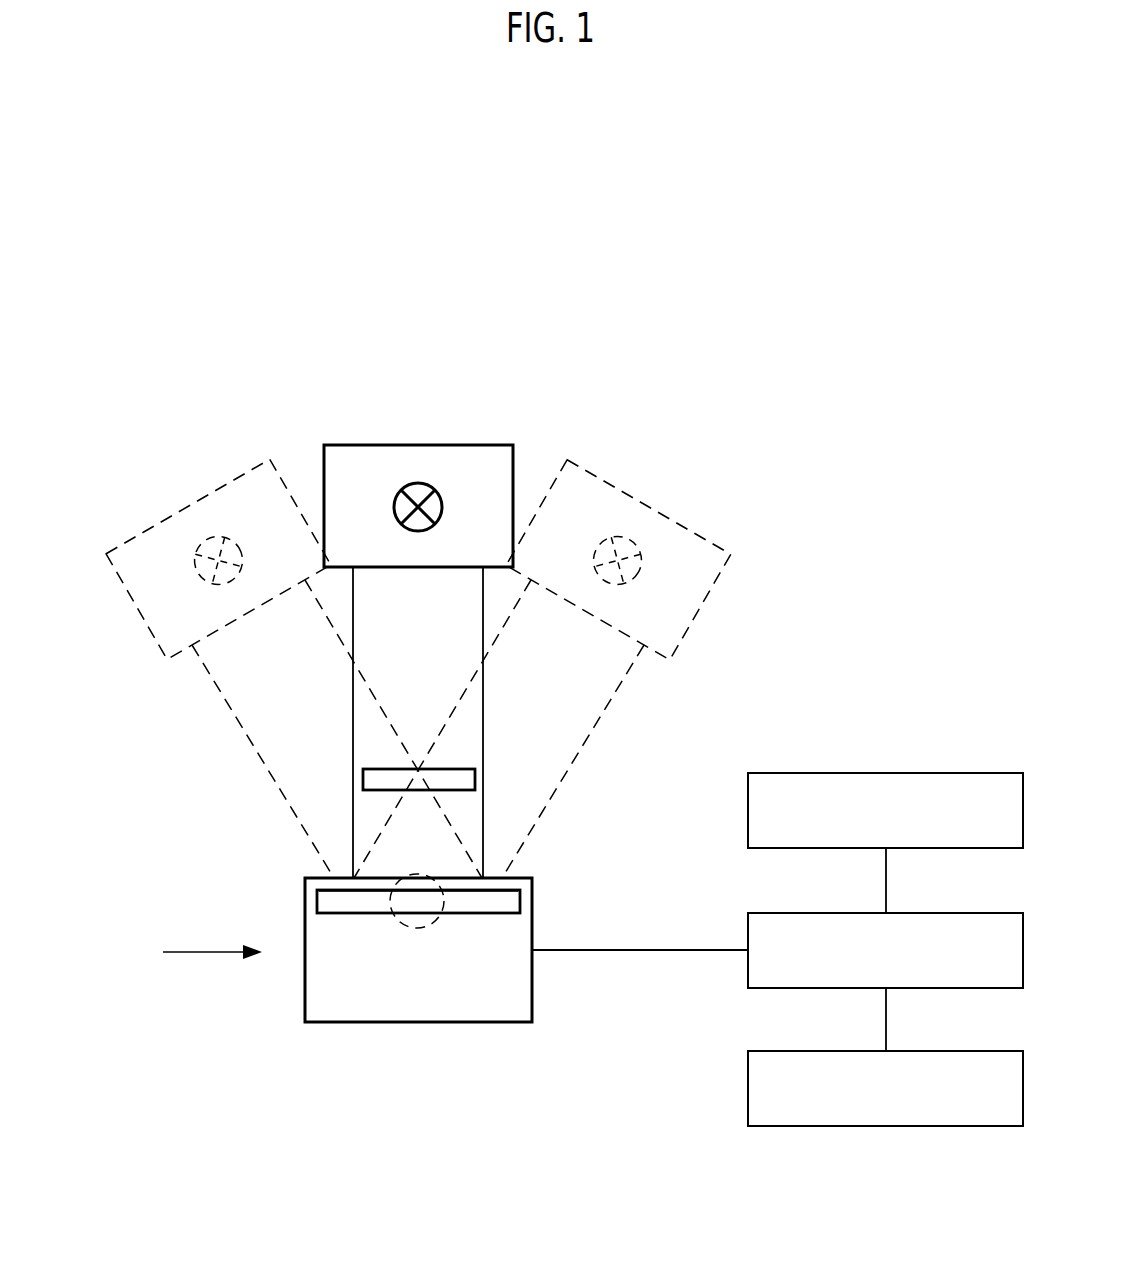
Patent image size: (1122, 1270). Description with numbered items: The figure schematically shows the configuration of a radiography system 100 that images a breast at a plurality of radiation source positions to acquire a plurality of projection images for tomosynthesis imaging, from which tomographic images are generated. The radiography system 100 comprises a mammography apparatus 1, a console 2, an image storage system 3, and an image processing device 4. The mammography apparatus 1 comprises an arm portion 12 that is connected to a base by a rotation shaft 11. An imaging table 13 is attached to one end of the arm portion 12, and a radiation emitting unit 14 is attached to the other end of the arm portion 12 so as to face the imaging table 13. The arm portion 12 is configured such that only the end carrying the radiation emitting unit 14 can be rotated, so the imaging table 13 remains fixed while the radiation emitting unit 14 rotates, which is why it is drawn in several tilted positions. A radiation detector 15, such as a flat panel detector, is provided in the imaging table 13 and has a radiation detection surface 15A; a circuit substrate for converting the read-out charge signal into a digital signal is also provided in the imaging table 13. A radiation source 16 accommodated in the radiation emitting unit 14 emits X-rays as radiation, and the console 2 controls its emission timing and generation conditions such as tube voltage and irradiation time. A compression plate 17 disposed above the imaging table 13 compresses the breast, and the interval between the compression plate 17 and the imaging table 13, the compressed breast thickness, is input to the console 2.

The radiography system 100 is at (906, 486).
The mammography apparatus 1 is at (308, 396).
The console 2 is at (962, 913).
The image storage system 3 is at (962, 773).
The image processing device 4 is at (962, 1051).
The rotation shaft 11 is at (401, 929).
The arm portion 12 is at (462, 627).
The imaging table 13 is at (517, 1000).
The radiation emitting unit 14 is at (473, 445).
The radiation detector 15 is at (520, 900).
The radiation detection surface 15A is at (492, 892).
The radiation source 16 is at (417, 481).
The compression plate 17 is at (468, 770).